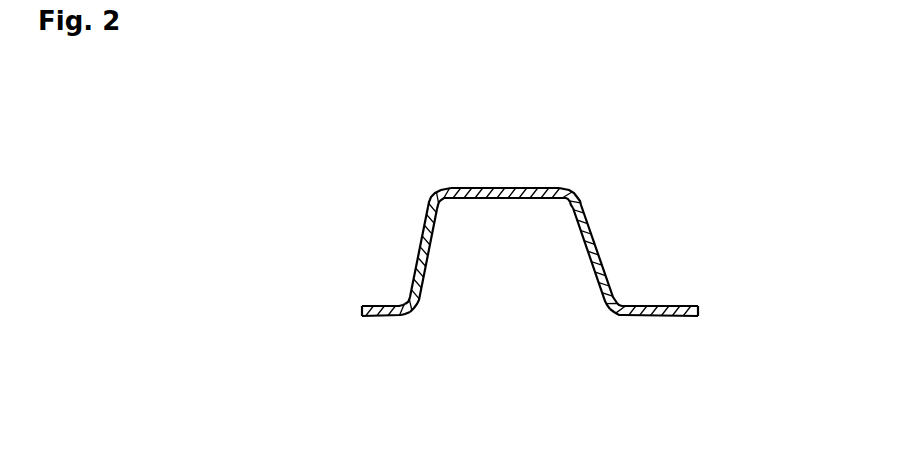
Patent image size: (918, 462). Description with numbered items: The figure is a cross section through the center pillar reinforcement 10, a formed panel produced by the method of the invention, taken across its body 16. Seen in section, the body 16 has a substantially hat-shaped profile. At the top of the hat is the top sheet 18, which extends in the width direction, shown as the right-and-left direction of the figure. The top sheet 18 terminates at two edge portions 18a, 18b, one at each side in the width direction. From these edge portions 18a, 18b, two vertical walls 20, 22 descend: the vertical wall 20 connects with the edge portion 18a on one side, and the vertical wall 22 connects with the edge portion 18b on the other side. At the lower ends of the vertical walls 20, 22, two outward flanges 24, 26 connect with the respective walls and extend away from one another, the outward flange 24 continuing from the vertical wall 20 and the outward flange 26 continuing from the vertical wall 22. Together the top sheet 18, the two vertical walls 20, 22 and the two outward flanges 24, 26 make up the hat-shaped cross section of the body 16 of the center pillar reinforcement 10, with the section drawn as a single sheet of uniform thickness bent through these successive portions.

The center pillar reinforcement 10 is at (697, 184).
The body 16 is at (501, 142).
The top sheet 18 is at (512, 188).
The edge portion 18a is at (436, 190).
The edge portion 18b is at (577, 191).
The vertical wall 20 is at (420, 232).
The vertical wall 22 is at (598, 237).
The outward flange 24 is at (378, 305).
The outward flange 26 is at (681, 306).